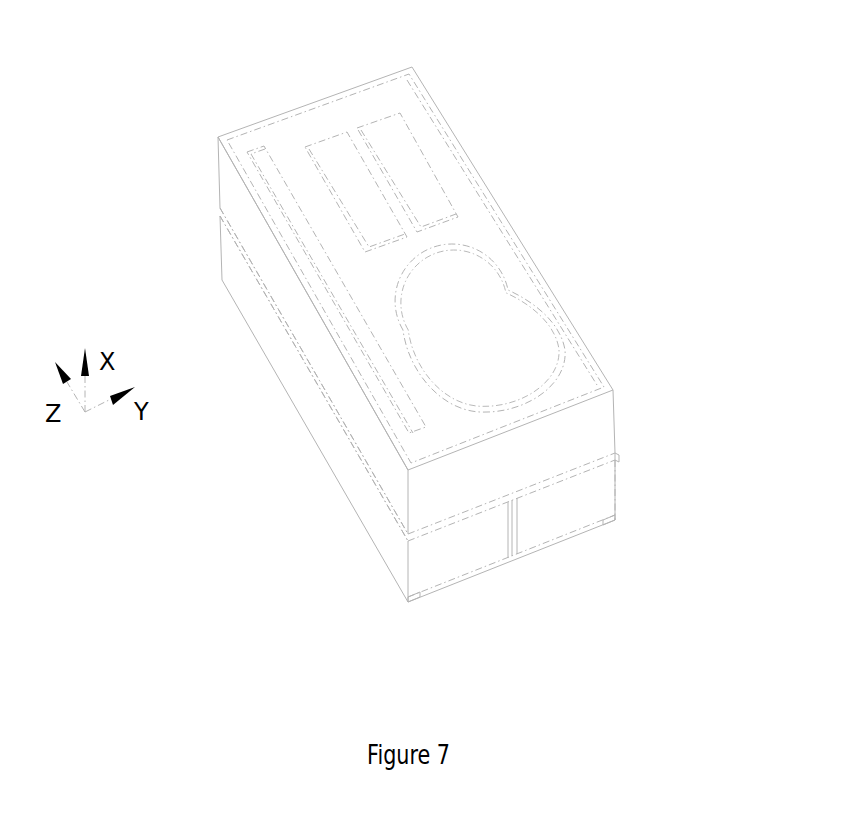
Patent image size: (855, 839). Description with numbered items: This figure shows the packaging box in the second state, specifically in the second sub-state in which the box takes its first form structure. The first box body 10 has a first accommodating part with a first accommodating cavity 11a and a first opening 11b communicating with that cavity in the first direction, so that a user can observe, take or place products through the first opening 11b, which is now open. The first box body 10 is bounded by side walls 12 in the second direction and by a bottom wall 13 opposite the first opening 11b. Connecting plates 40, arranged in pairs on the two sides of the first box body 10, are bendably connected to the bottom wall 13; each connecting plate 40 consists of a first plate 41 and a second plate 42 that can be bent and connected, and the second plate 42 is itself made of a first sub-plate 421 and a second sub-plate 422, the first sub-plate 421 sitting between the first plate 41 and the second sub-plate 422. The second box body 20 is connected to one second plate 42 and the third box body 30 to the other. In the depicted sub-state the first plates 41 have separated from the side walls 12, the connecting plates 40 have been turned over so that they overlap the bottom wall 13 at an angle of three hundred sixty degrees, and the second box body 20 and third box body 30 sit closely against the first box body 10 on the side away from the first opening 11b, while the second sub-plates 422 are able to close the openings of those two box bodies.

The first box body 10 is at (380, 270).
The first accommodating cavity 11a is at (291, 130).
The first opening 11b is at (343, 78).
The side wall 12 is at (228, 182).
The bottom wall 13 is at (470, 500).
The second box body 20 is at (343, 598).
The third box body 30 is at (690, 503).
The connecting plate 40 is at (694, 278).
The first plate 41 is at (325, 532).
The second plate 42 is at (569, 523).
The first sub-plate 421 is at (517, 540).
The second sub-plate 422 is at (610, 527).